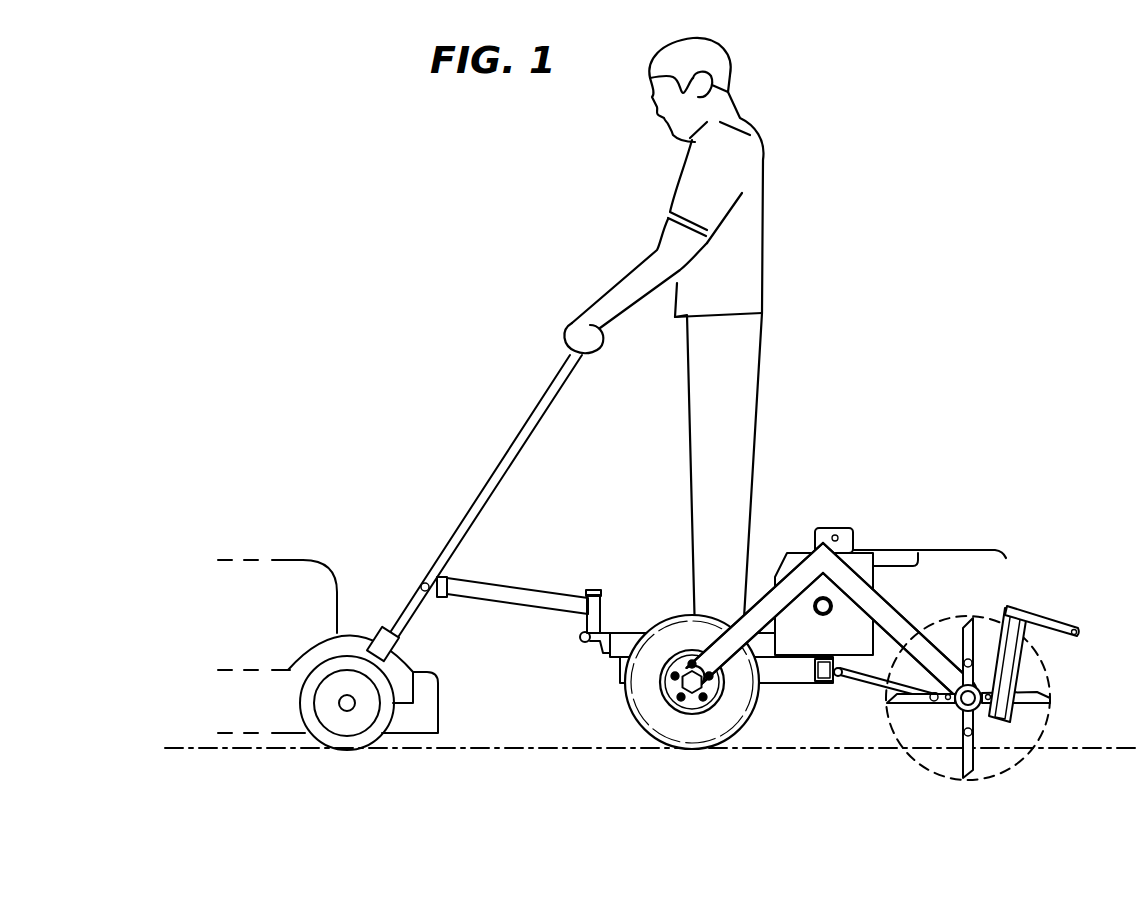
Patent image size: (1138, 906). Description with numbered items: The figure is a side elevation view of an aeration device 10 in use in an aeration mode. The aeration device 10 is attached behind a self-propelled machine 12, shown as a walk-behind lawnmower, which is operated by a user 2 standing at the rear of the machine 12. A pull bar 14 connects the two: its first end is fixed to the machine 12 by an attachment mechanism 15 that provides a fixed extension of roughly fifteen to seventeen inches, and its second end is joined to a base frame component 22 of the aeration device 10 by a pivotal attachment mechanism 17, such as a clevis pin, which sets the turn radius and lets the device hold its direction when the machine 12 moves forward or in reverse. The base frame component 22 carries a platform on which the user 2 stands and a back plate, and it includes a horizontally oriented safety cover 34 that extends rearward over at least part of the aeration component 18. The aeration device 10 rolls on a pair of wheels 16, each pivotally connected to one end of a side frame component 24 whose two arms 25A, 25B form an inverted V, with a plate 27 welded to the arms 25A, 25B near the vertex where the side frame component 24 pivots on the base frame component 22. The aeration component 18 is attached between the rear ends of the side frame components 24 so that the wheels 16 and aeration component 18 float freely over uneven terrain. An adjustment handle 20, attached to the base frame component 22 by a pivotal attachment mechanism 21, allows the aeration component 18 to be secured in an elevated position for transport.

The user 2 is at (760, 162).
The aeration device 10 is at (678, 551).
The self-propelled machine 12 is at (303, 560).
The pull bar 14 is at (516, 590).
The attachment mechanism 15 is at (433, 597).
The wheels 16 is at (690, 737).
The pivotal attachment mechanism 17 is at (598, 590).
The aeration component 18 is at (1068, 697).
The adjustment handle 20 is at (1052, 613).
The pivotal attachment mechanism 21 is at (840, 685).
The base frame component 22 is at (780, 690).
The side frame component 24 is at (917, 600).
The first arm 25A is at (778, 592).
The second arm 25B is at (862, 584).
The plate 27 is at (830, 645).
The safety cover 34 is at (968, 547).